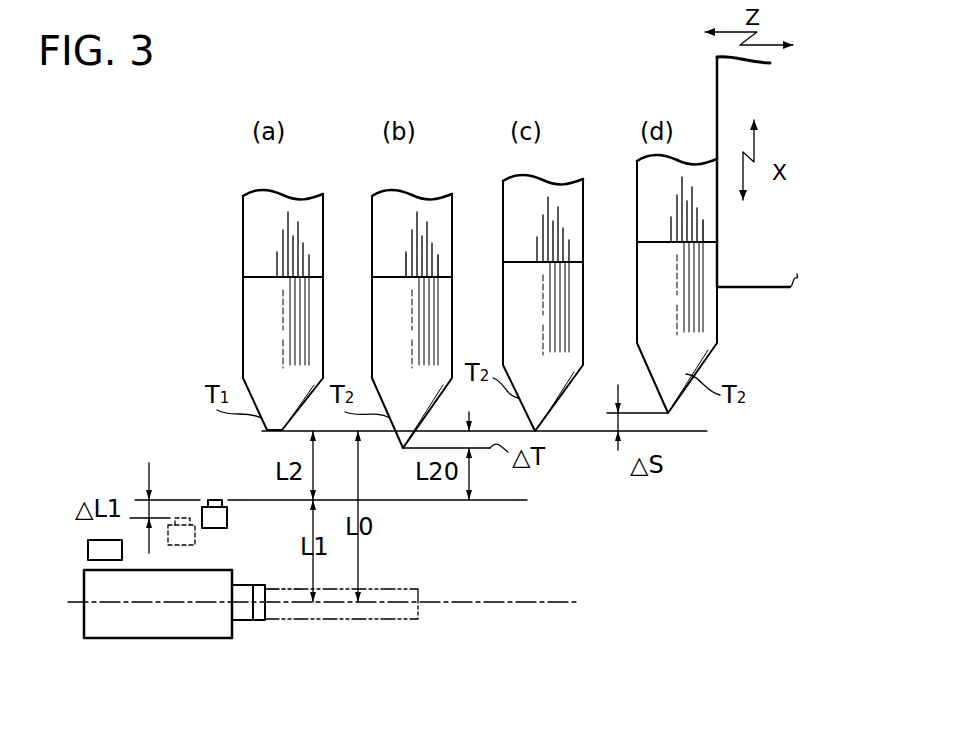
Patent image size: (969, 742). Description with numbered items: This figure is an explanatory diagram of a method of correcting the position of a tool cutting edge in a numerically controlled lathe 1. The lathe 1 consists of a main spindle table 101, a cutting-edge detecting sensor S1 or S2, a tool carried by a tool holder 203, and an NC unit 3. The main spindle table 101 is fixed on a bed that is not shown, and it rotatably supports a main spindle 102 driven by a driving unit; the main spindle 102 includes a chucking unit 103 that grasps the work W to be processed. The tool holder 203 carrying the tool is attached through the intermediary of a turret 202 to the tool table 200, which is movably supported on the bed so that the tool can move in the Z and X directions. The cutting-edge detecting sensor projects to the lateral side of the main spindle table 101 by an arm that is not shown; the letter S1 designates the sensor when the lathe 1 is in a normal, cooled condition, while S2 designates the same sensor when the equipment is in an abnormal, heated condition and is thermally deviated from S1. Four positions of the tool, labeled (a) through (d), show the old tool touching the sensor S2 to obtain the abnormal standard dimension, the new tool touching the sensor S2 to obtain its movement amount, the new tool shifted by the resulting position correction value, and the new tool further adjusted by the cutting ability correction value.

The numerically controlled lathe 1 is at (277, 631).
The NC unit 3 is at (88, 550).
The main spindle table 101 is at (110, 638).
The main spindle 102 is at (238, 621).
The chucking unit 103 is at (262, 621).
The tool table 200 is at (717, 82).
The turret 202 is at (648, 225).
The tool holder 203 is at (385, 300).
The work W is at (392, 619).
The cutting-edge detecting sensor S1 is at (190, 540).
The cutting-edge detecting sensor S2 is at (227, 515).